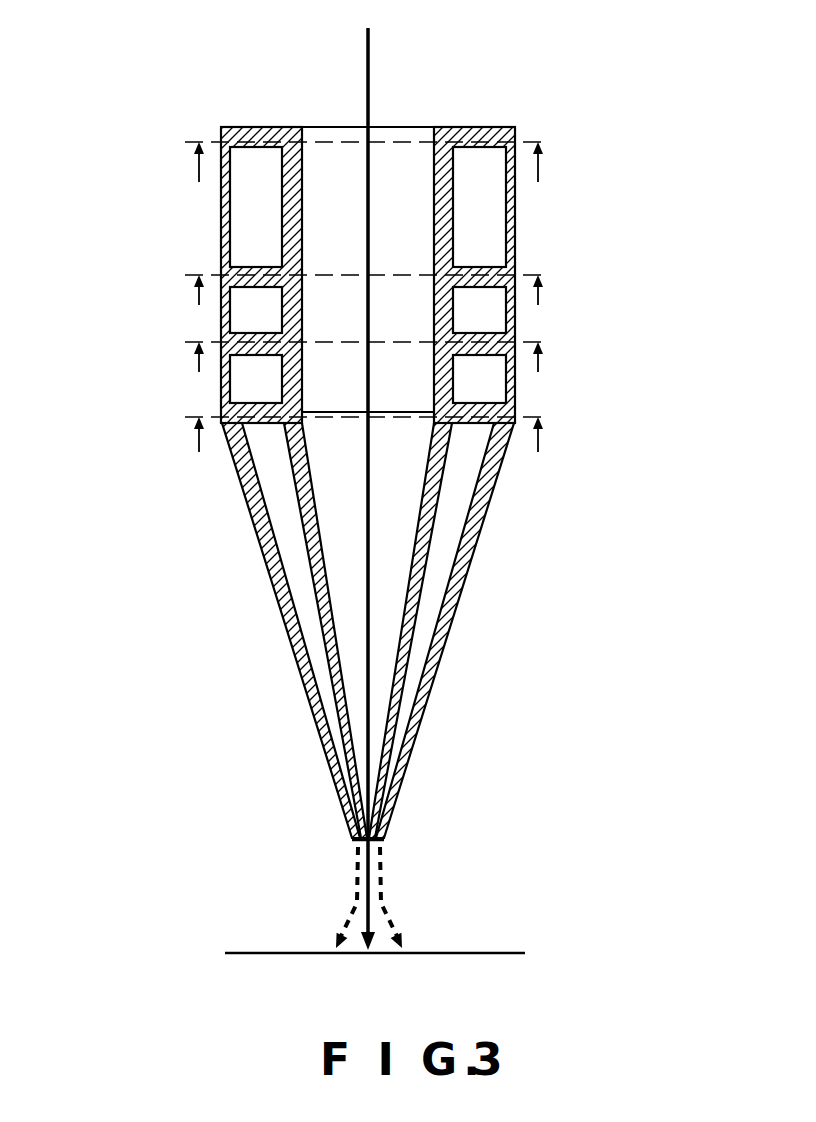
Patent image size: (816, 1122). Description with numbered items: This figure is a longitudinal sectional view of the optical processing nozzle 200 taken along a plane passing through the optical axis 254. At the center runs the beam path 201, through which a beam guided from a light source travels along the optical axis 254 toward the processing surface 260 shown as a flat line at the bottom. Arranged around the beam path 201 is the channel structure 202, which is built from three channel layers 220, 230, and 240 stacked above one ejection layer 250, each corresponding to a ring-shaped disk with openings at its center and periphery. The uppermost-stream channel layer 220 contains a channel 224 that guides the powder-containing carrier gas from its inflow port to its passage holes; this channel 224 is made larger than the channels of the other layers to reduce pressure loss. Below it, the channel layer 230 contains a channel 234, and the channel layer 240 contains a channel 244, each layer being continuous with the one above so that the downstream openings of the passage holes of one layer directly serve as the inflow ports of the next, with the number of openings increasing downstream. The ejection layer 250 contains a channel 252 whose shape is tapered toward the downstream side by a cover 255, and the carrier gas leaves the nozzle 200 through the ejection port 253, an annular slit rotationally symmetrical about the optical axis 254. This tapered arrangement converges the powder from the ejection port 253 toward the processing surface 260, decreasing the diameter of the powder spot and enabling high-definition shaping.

The nozzle 200 is at (148, 84).
The beam path 201 is at (302, 180).
The channel structure 202 is at (667, 837).
The channel layer 220 is at (583, 132).
The channel layer 230 is at (583, 267).
The channel layer 240 is at (588, 343).
The ejection layer 250 is at (590, 420).
The channel 224 is at (258, 228).
The channel 234 is at (262, 311).
The channel 244 is at (255, 382).
The channel 252 is at (427, 624).
The ejection port 253 is at (380, 842).
The optical axis 254 is at (371, 62).
The cover 255 is at (282, 619).
The processing surface 260 is at (272, 950).